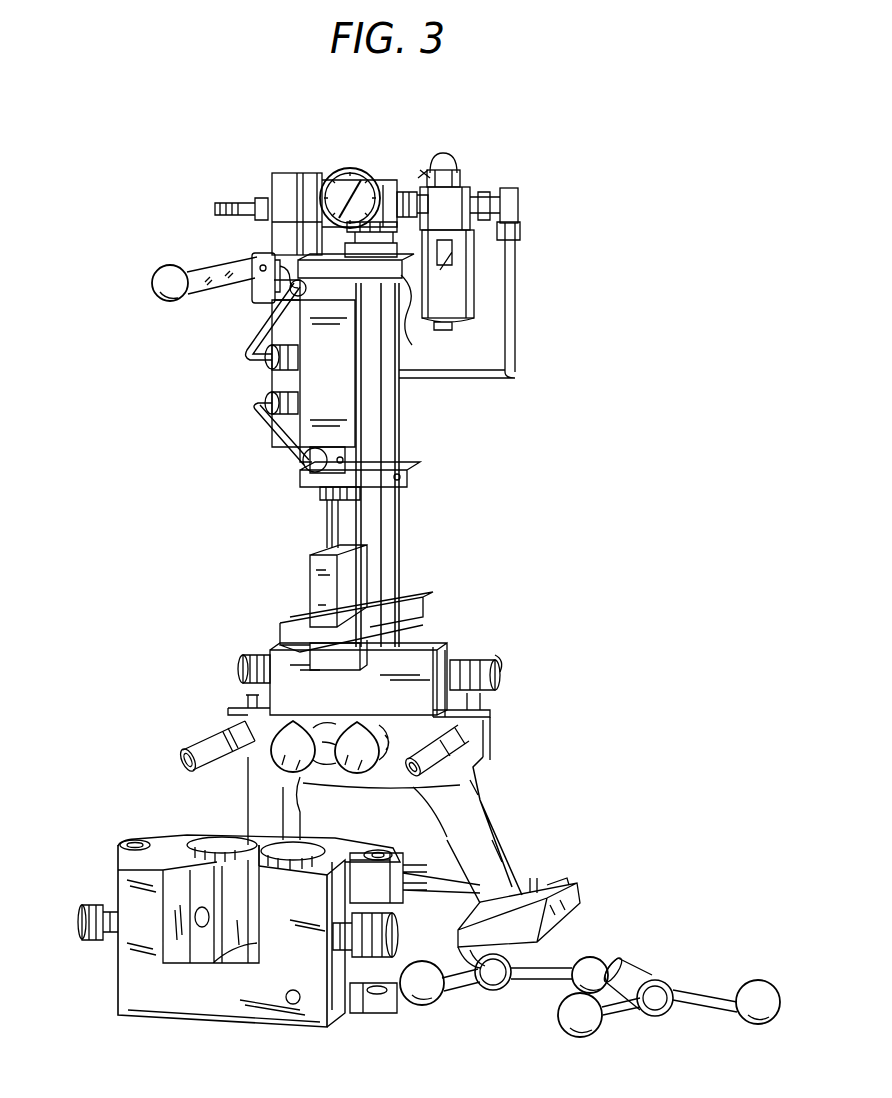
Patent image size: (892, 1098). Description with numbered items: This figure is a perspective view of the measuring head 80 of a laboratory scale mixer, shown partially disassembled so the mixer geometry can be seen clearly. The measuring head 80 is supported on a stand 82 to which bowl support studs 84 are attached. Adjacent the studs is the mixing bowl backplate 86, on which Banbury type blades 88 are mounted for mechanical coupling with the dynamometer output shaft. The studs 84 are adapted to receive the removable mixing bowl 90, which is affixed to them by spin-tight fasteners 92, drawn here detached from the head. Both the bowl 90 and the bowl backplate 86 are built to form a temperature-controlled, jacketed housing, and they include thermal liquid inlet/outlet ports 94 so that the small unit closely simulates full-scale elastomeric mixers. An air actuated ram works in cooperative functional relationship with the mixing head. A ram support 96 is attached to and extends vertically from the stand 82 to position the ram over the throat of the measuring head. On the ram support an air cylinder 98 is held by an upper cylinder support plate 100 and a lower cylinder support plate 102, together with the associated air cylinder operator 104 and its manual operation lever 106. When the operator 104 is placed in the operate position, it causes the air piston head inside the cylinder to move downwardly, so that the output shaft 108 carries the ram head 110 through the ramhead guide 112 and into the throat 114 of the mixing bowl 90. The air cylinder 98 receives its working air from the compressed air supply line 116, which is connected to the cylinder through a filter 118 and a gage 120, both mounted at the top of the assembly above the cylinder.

The measuring head 80 is at (151, 1028).
The stand 82 is at (490, 828).
The bowl support studs 84 is at (470, 757).
The mixing bowl backplate 86 is at (340, 785).
The Banbury type blades 88 is at (291, 722).
The removable mixing bowl 90 is at (305, 1012).
The spin-tight fasteners 92 is at (485, 998).
The thermal liquid inlet/outlet ports 94 is at (242, 666).
The ram support 96 is at (400, 518).
The air cylinder 98 is at (305, 420).
The upper cylinder support plate 100 is at (423, 315).
The lower cylinder support plate 102 is at (408, 468).
The air cylinder operator 104 is at (270, 380).
The manual operation lever 106 is at (225, 268).
The output shaft 108 is at (327, 525).
The ram head 110 is at (312, 580).
The ramhead guide 112 is at (422, 612).
The throat 114 is at (228, 845).
The compressed air supply line 116 is at (518, 278).
The filter 118 is at (467, 187).
The gage 120 is at (360, 170).